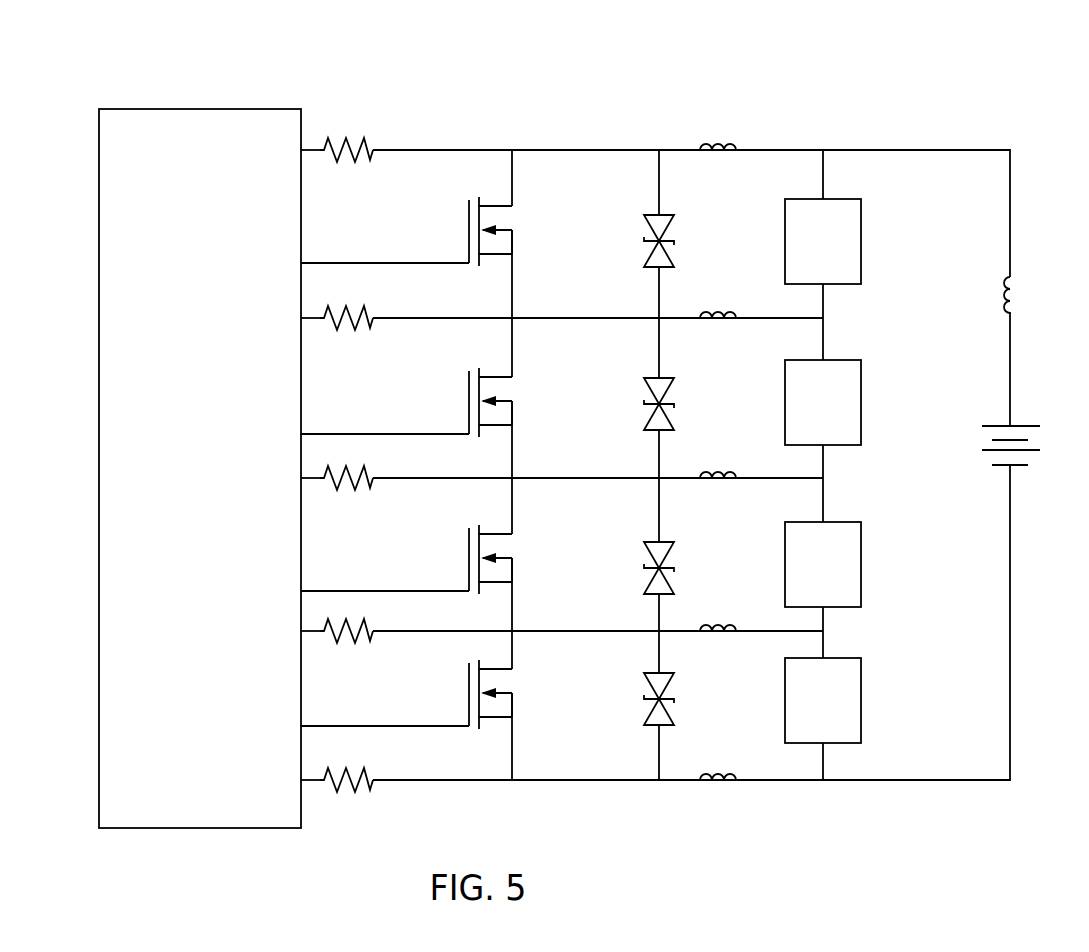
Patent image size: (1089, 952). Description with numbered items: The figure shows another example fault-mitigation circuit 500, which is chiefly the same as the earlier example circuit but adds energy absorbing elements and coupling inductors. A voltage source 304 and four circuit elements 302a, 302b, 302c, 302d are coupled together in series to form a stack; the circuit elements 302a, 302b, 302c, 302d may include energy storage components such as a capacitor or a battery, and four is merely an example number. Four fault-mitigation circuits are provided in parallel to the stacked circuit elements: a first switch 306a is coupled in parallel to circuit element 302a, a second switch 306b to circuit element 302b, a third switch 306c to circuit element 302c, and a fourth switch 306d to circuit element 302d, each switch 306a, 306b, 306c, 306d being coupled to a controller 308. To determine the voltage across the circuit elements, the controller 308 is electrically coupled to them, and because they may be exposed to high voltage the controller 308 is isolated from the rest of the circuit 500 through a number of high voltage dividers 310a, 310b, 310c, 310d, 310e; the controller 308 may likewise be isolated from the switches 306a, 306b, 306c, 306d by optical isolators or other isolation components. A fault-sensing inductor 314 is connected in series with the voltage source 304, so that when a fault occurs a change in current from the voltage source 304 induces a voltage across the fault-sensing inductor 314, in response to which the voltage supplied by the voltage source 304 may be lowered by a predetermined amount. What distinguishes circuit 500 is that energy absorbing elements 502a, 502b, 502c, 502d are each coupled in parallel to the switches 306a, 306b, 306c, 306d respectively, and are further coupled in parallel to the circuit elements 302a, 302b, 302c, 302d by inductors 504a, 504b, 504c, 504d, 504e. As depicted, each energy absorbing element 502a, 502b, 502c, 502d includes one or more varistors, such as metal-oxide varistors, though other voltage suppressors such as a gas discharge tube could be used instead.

The circuit 500 is at (959, 100).
The controller 308 is at (99, 347).
The high voltage divider 310a is at (357, 140).
The high voltage divider 310b is at (364, 330).
The high voltage divider 310c is at (364, 490).
The high voltage divider 310d is at (364, 643).
The high voltage divider 310e is at (364, 792).
The switch 306a is at (536, 230).
The switch 306b is at (536, 401).
The switch 306c is at (536, 558).
The switch 306d is at (536, 691).
The energy absorbing element 502a is at (647, 258).
The energy absorbing element 502b is at (647, 421).
The energy absorbing element 502c is at (647, 585).
The energy absorbing element 502d is at (647, 716).
The inductor 504a is at (712, 147).
The inductor 504b is at (712, 315).
The inductor 504c is at (712, 475).
The inductor 504d is at (712, 628).
The inductor 504e is at (712, 777).
The circuit element 302a is at (861, 250).
The circuit element 302b is at (861, 411).
The circuit element 302c is at (861, 573).
The circuit element 302d is at (861, 701).
The fault-sensing inductor 314 is at (1018, 291).
The voltage source 304 is at (1025, 425).